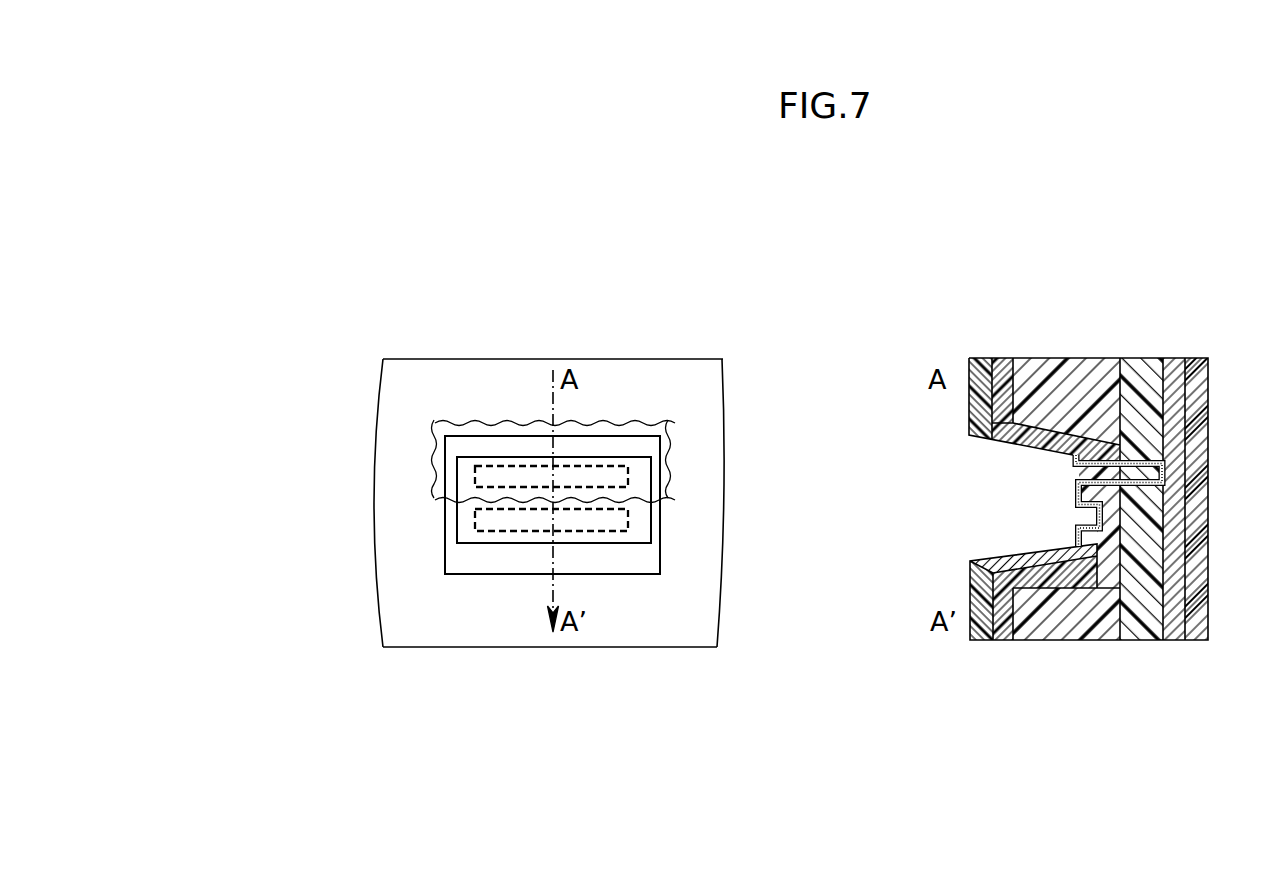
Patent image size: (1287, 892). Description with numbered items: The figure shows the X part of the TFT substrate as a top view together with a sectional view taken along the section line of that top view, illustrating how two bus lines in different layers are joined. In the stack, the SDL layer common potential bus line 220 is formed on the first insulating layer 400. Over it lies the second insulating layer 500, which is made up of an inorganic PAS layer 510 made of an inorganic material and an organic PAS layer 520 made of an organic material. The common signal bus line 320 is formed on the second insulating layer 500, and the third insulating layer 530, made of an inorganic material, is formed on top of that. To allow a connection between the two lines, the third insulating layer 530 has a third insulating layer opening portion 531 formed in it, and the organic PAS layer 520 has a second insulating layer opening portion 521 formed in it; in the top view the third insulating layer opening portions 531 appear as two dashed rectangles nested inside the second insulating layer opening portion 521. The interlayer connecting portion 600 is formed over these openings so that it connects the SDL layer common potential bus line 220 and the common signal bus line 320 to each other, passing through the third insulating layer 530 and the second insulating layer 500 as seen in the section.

The SDL layer common potential bus line 220 is at (668, 457).
The common signal bus line 320 is at (1010, 641).
The first insulating layer 400 is at (1198, 641).
The second insulating layer 500 is at (1088, 568).
The inorganic PAS layer 510 is at (1150, 641).
The organic PAS layer 520 is at (1066, 544).
The second insulating layer opening portion 521 is at (661, 560).
The third insulating layer 530 is at (985, 641).
The third insulating layer opening portion 531 is at (475, 477).
The interlayer connecting portion 600 is at (651, 517).